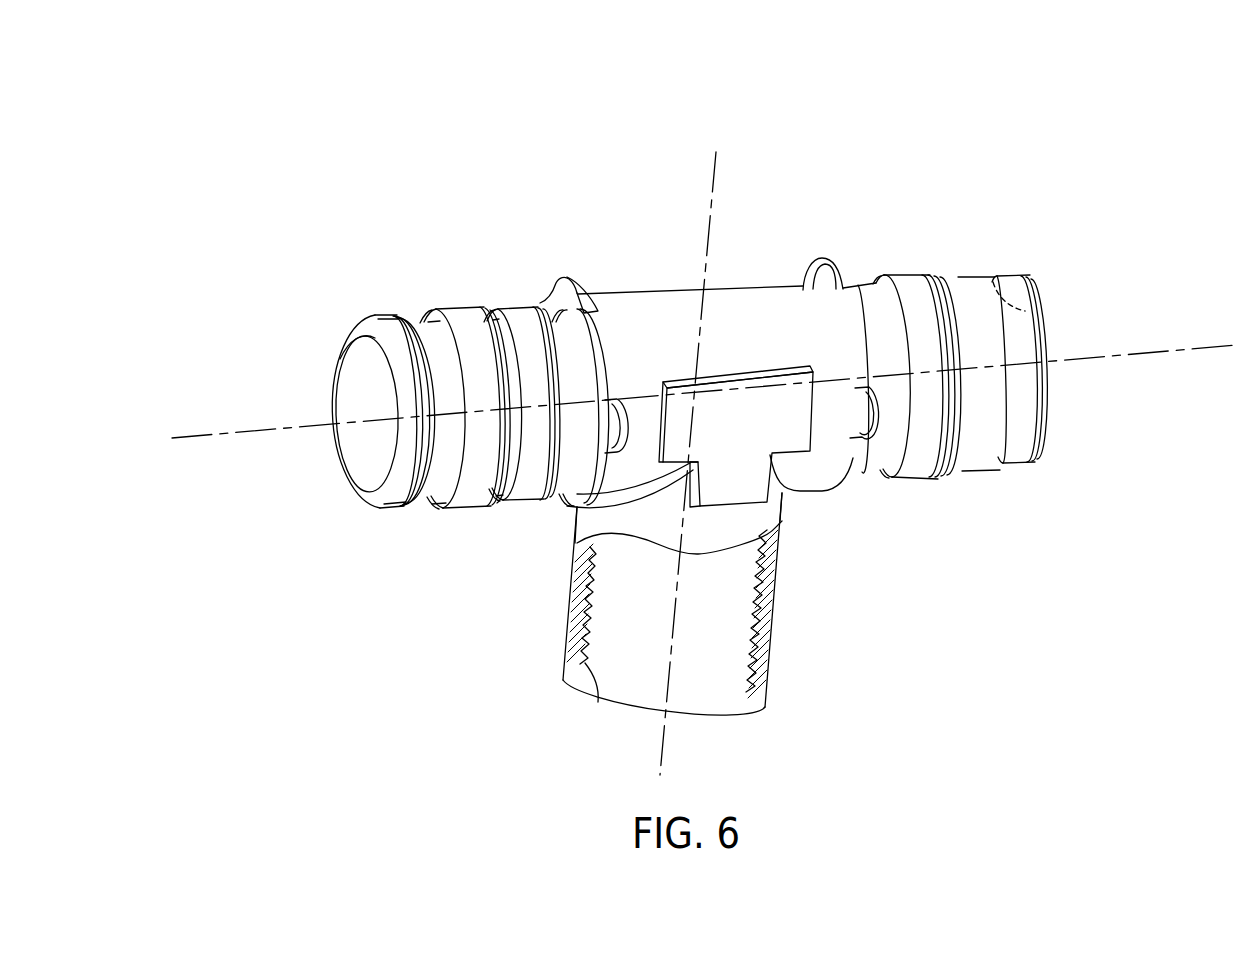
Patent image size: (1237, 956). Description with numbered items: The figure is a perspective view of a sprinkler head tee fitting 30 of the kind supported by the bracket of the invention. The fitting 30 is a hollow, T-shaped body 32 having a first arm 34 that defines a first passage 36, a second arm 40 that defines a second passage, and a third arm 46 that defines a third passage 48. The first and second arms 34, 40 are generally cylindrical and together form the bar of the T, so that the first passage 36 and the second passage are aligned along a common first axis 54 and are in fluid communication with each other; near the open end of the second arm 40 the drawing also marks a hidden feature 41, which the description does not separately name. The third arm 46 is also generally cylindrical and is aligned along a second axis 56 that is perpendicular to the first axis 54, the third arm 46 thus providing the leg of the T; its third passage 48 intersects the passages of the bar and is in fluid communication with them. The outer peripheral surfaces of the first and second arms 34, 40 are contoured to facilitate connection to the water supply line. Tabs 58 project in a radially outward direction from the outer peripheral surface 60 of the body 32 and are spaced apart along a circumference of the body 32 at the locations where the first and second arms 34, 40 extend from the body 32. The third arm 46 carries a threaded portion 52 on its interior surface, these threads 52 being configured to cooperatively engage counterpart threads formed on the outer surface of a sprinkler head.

The sprinkler head tee fitting 30 is at (372, 129).
The T-shaped body 32 is at (735, 336).
The first arm 34 is at (463, 330).
The first passage 36 is at (338, 361).
The second arm 40 is at (950, 286).
The internal groove 41 is at (1027, 311).
The third arm 46 is at (587, 531).
The third passage 48 is at (696, 626).
The threaded portion 52 is at (598, 701).
The first axis 54 is at (210, 434).
The second axis 56 is at (720, 182).
The tabs 58 is at (627, 406).
The outer peripheral surface 60 is at (787, 291).